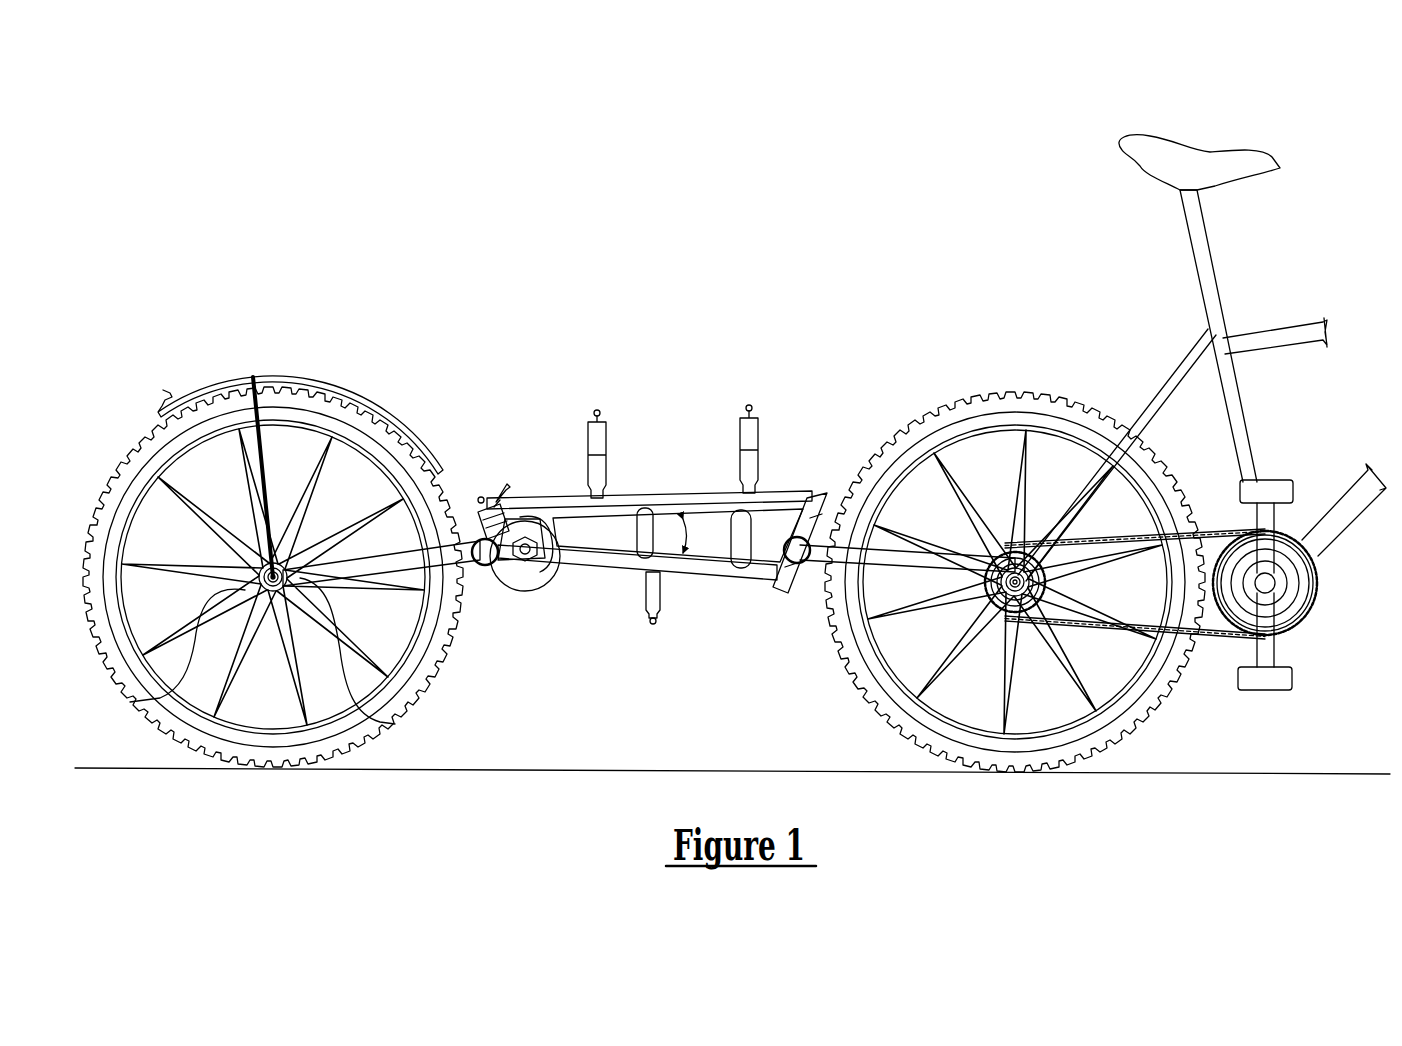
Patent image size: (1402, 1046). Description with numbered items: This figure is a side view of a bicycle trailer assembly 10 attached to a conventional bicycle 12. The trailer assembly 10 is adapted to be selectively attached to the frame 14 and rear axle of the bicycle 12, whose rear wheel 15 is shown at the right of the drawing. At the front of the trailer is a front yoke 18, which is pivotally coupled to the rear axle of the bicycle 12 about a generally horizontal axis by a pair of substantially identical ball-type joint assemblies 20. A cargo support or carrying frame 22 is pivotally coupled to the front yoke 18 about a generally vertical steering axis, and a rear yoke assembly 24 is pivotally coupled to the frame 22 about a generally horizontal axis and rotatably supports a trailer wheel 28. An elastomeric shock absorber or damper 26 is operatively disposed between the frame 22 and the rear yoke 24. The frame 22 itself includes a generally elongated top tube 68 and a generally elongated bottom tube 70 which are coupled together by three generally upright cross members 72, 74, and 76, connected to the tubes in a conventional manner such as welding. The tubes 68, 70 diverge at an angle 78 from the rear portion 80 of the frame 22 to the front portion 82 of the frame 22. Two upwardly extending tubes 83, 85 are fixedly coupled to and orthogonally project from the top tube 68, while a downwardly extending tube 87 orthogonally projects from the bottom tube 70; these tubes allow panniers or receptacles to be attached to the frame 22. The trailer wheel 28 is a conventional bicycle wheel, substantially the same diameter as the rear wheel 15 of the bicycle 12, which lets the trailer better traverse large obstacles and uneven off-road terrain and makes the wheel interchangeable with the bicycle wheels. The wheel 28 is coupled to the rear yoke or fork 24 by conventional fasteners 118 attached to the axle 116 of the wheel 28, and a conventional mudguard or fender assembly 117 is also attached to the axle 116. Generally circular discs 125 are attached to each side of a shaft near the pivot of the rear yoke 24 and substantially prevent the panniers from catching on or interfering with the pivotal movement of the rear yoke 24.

The bicycle trailer assembly 10 is at (532, 386).
The bicycle 12 is at (1137, 300).
The frame 14 is at (1165, 373).
The rear wheel 15 is at (966, 410).
The front yoke 18 is at (977, 545).
The ball-type joint assemblies 20 is at (1015, 625).
The cargo support frame 22 is at (672, 490).
The rear yoke assembly 24 is at (408, 578).
The shock absorber 26 is at (468, 496).
The trailer wheel 28 is at (128, 448).
The top tube 68 is at (618, 508).
The bottom tube 70 is at (703, 576).
The cross member 72 is at (742, 552).
The cross member 74 is at (641, 558).
The cross member 76 is at (550, 566).
The angle 78 is at (717, 537).
The rear portion 80 is at (526, 500).
The front portion 82 is at (808, 487).
The upwardly extending tube 83 is at (588, 435).
The upwardly extending tube 85 is at (754, 430).
The downwardly extending tube 87 is at (661, 603).
The axle 116 is at (395, 724).
The fender assembly 117 is at (322, 376).
The fasteners 118 is at (130, 702).
The discs 125 is at (520, 582).